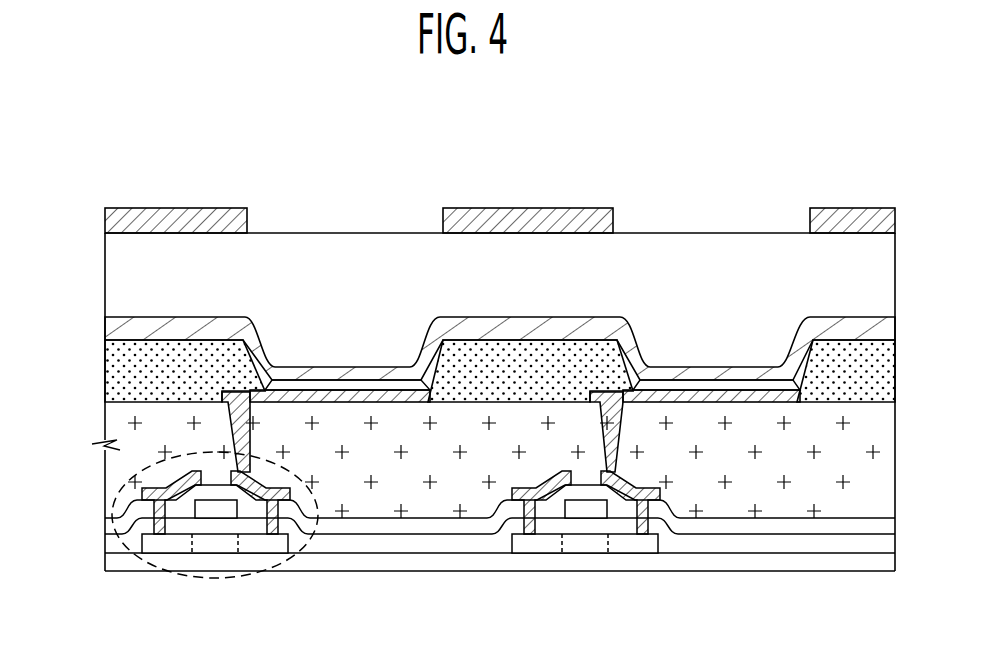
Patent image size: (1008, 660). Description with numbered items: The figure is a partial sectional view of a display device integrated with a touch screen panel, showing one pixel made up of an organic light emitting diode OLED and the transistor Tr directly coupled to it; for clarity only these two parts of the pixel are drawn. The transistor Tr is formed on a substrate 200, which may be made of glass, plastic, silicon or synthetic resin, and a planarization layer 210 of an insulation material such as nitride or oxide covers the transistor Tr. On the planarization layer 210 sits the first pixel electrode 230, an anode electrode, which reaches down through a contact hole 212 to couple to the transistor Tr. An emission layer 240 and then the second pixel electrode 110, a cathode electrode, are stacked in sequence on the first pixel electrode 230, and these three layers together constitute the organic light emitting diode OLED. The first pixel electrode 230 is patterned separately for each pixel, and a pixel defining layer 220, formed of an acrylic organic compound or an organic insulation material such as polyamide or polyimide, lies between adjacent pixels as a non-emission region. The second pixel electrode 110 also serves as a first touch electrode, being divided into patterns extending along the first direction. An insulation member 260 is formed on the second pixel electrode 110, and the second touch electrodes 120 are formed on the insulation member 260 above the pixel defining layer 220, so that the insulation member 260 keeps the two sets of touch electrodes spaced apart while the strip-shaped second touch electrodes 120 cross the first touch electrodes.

The second pixel electrode 110 is at (303, 372).
The emission layer 240 is at (353, 386).
The first pixel electrode 230 is at (390, 393).
The second touch electrode 120 is at (558, 222).
The insulation member 260 is at (106, 262).
The pixel defining layer 220 is at (106, 366).
The planarization layer 210 is at (106, 422).
The transistor Tr is at (127, 470).
The substrate 200 is at (106, 563).
The contact hole 212 is at (254, 441).
The organic light emitting diode OLED is at (464, 291).